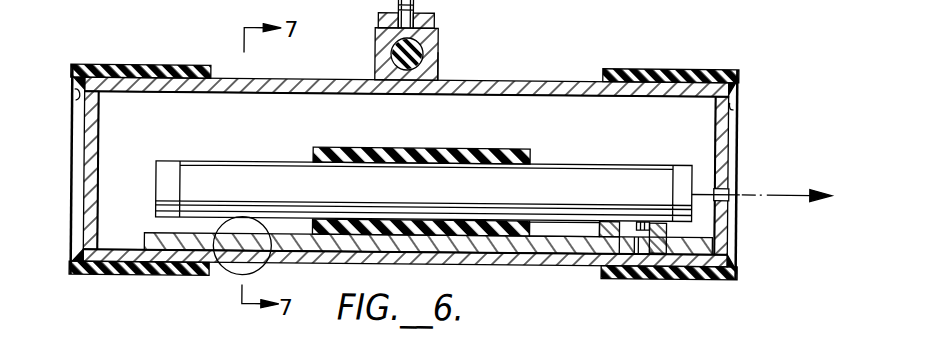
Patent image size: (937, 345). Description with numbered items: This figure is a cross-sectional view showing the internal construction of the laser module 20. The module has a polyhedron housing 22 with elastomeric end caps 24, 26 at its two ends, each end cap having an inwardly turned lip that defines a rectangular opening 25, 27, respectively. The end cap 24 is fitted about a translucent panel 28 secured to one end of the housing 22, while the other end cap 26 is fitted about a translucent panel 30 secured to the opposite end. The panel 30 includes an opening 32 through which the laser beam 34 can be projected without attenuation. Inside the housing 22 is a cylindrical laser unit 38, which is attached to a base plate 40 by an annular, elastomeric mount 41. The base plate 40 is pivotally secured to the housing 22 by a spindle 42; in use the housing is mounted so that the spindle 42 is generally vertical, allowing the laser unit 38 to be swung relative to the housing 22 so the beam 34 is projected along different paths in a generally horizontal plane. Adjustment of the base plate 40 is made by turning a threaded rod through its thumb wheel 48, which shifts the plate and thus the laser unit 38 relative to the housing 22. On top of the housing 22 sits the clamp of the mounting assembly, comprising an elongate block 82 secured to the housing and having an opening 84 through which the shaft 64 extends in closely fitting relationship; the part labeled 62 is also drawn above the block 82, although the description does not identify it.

The laser module 20 is at (546, 14).
The polyhedron housing 22 is at (524, 80).
The elastomeric end cap 24 is at (153, 66).
The rectangular opening 25 is at (75, 103).
The elastomeric end cap 26 is at (660, 68).
The rectangular opening 27 is at (737, 107).
The translucent panel 28 is at (74, 161).
The translucent panel 30 is at (722, 140).
The opening 32 is at (726, 201).
The laser beam 34 is at (744, 192).
The laser unit 38 is at (561, 172).
The base plate 40 is at (551, 229).
The annular elastomeric mount 41 is at (435, 152).
The spindle 42 is at (612, 265).
The thumb wheel 48 is at (250, 271).
The stem 62 is at (440, 1).
The shaft 64 is at (423, 55).
The elongate block 82 is at (373, 46).
The opening 84 is at (437, 63).